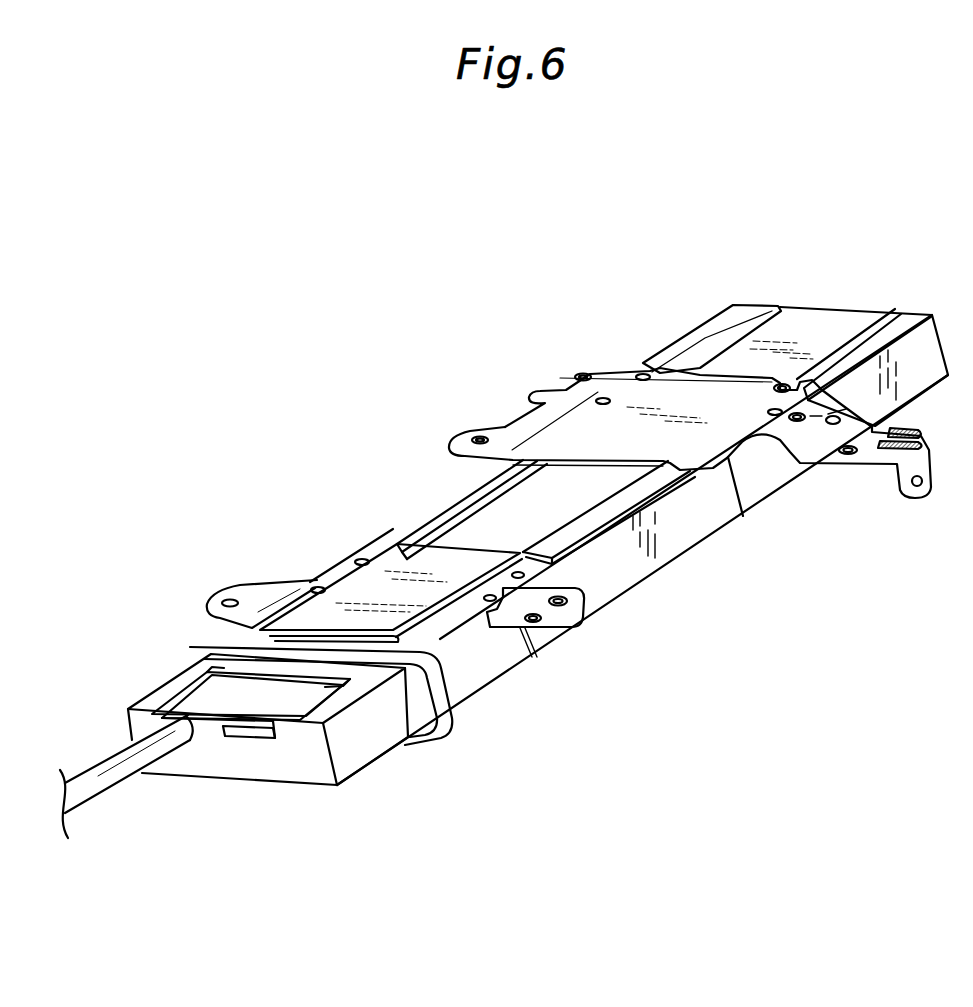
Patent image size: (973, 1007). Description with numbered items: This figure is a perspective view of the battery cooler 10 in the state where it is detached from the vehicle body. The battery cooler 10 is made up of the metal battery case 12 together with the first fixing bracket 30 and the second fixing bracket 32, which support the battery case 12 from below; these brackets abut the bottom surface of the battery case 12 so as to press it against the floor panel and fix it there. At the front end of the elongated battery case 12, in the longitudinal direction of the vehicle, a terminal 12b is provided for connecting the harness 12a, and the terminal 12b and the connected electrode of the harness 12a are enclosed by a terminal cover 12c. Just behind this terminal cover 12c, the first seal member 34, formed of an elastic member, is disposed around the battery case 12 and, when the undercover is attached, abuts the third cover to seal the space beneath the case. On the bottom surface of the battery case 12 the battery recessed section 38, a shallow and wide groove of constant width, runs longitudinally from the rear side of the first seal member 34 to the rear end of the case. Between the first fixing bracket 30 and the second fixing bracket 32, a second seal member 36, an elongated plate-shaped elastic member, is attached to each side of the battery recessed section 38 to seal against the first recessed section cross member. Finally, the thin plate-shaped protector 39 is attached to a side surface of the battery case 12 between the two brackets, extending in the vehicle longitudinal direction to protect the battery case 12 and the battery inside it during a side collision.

The battery cooler 10 is at (336, 348).
The battery case 12 is at (480, 658).
The harness 12a is at (123, 787).
The terminal 12b is at (235, 729).
The terminal cover 12c is at (198, 698).
The first fixing bracket 30 is at (358, 592).
The second fixing bracket 32 is at (698, 383).
The first seal member 34 is at (441, 731).
The second seal member 36 is at (433, 521).
The battery recessed section 38 is at (755, 333).
The protector 39 is at (695, 518).